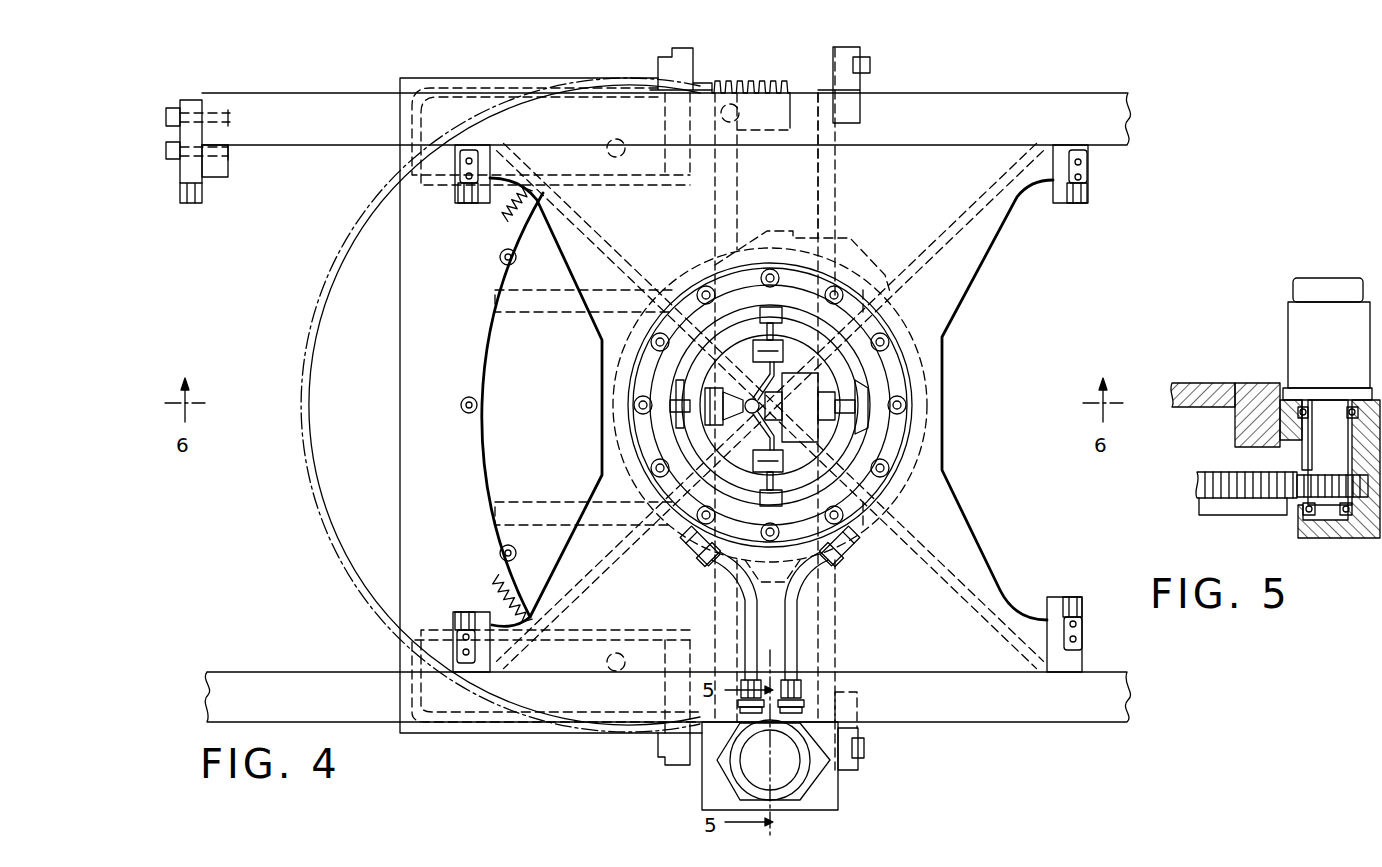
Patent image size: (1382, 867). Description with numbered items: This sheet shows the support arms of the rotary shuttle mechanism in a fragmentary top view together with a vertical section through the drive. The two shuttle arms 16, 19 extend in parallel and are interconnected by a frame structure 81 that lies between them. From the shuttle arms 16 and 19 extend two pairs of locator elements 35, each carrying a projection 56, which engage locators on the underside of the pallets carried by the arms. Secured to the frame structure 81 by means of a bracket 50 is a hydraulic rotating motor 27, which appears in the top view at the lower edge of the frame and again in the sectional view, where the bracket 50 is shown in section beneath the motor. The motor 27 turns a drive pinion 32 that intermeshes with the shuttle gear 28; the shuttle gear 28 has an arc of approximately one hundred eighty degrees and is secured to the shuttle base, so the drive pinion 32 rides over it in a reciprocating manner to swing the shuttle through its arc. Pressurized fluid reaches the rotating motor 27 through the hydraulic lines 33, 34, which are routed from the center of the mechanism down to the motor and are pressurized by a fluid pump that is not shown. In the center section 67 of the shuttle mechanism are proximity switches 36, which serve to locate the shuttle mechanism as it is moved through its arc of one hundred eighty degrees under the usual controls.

In FIG. 4, the shuttle arm 16 is at (1108, 123).
In FIG. 4, the shuttle arm 19 is at (306, 93).
In FIG. 4, the hydraulic rotating motor 27 is at (752, 775).
In FIG. 5, the hydraulic rotating motor 27 is at (1306, 318).
In FIG. 4, the shuttle gear 28 is at (492, 588).
In FIG. 5, the shuttle gear 28 is at (1196, 478).
In FIG. 5, the drive pinion 32 is at (1328, 497).
In FIG. 4, the hydraulic line 33 is at (747, 612).
In FIG. 4, the hydraulic line 34 is at (796, 622).
In FIG. 4, the locator element 35 is at (205, 195).
In FIG. 4, the proximity switch 36 is at (744, 380).
In FIG. 4, the bracket 50 is at (848, 770).
In FIG. 5, the bracket 50 is at (1212, 383).
In FIG. 4, the projection 56 is at (198, 205).
In FIG. 4, the center section 67 is at (945, 362).
In FIG. 4, the frame structure 81 is at (925, 242).